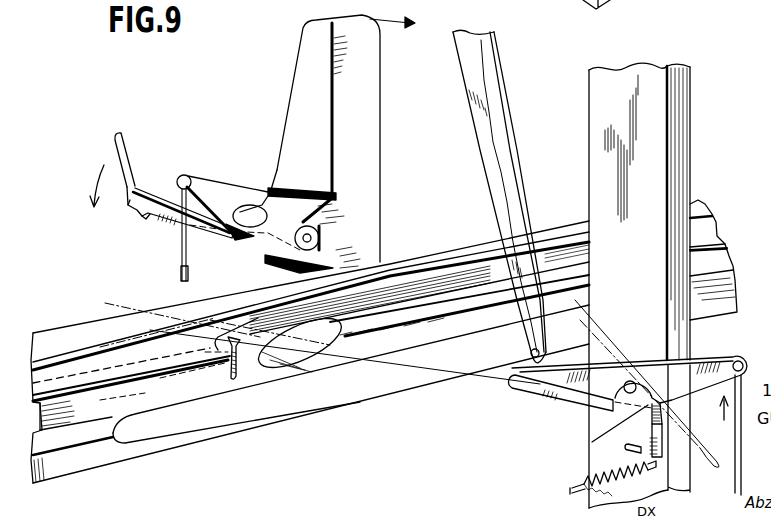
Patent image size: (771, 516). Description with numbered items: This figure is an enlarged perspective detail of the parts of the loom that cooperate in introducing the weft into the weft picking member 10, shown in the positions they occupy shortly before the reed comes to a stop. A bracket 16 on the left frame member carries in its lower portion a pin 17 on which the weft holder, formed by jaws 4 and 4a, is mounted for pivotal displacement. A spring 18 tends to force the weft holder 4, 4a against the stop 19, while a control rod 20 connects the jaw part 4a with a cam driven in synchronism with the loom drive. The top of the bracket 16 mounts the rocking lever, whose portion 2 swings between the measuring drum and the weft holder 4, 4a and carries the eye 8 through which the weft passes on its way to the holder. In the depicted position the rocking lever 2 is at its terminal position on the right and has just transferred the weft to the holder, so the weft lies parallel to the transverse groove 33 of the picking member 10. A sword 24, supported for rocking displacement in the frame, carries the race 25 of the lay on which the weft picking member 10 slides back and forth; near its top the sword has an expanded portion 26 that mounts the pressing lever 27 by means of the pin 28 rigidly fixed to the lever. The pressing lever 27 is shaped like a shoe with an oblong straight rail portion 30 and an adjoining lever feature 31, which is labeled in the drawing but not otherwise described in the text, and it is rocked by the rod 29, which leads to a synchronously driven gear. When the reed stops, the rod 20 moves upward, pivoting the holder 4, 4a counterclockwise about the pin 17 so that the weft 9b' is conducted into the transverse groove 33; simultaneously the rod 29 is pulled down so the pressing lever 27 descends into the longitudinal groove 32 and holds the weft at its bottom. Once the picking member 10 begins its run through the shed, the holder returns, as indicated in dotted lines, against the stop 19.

The rocking lever portion 2 is at (490, 180).
The weft holder jaw 4 is at (522, 392).
The weft holder jaw part 4a is at (590, 385).
The eye 8 is at (530, 353).
The weft 9b' is at (188, 335).
The weft picking member 10 is at (166, 395).
The bracket 16 is at (678, 198).
The pin 17 is at (631, 381).
The spring 18 is at (600, 470).
The stop 19 is at (629, 446).
The control rod 20 is at (735, 470).
The sword 24 is at (372, 95).
The race 25 is at (430, 260).
The expanded portion 26 is at (262, 195).
The pressing lever 27 is at (130, 142).
The pin 28 is at (322, 246).
The rod 29 is at (181, 276).
The oblong straight rail portion 30 is at (130, 204).
The hook 31 is at (148, 216).
The longitudinal groove 32 is at (70, 367).
The transverse groove 33 is at (240, 380).